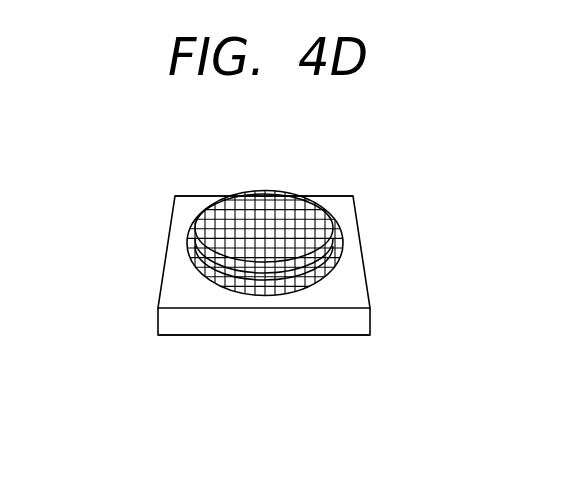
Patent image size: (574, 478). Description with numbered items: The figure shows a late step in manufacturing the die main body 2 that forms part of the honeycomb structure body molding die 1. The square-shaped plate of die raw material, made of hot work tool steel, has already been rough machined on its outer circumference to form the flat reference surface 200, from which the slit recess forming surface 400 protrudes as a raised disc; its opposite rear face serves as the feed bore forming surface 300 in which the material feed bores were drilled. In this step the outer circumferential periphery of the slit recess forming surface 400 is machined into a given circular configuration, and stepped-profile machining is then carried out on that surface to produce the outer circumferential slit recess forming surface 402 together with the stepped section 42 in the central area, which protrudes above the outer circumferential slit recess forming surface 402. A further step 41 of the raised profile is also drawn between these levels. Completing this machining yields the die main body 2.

The honeycomb structure body molding die 1 is at (7, 257).
The die main body 2 is at (223, 347).
The lower layer 41 is at (333, 248).
The stepped section 42 is at (300, 221).
The reference surface 200 is at (188, 217).
The feed bore forming surface 300 is at (327, 336).
The slit recess forming surface 400 is at (288, 212).
The outer circumferential slit recess forming surface 402 is at (190, 258).